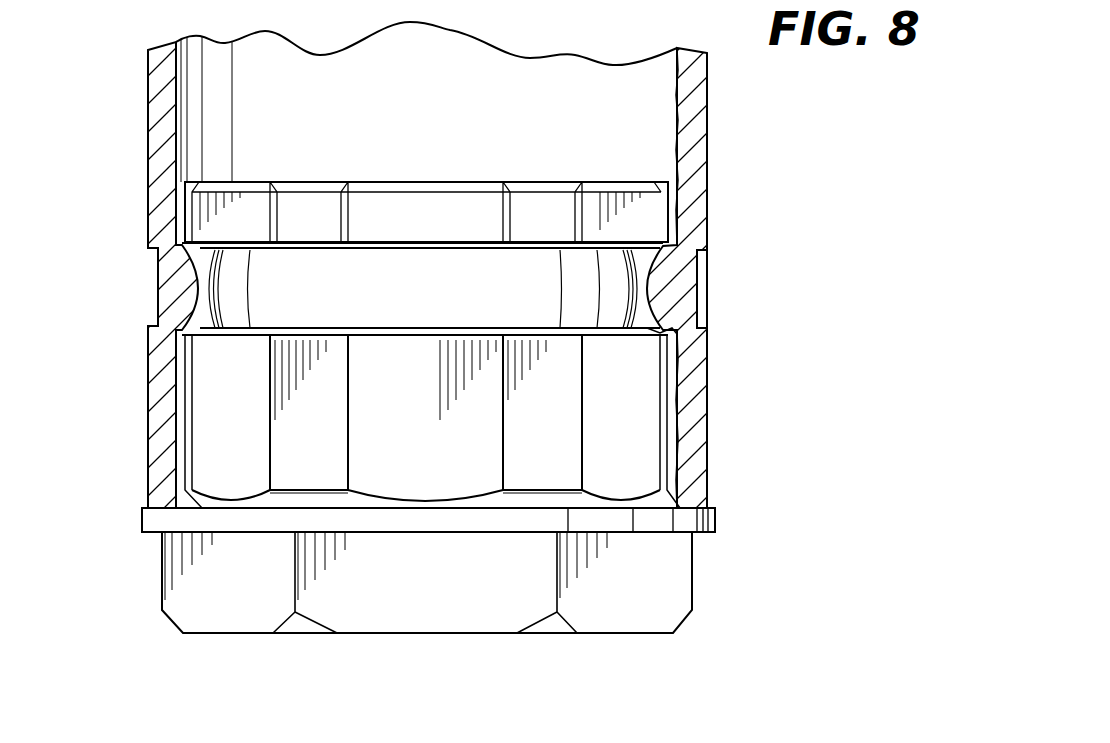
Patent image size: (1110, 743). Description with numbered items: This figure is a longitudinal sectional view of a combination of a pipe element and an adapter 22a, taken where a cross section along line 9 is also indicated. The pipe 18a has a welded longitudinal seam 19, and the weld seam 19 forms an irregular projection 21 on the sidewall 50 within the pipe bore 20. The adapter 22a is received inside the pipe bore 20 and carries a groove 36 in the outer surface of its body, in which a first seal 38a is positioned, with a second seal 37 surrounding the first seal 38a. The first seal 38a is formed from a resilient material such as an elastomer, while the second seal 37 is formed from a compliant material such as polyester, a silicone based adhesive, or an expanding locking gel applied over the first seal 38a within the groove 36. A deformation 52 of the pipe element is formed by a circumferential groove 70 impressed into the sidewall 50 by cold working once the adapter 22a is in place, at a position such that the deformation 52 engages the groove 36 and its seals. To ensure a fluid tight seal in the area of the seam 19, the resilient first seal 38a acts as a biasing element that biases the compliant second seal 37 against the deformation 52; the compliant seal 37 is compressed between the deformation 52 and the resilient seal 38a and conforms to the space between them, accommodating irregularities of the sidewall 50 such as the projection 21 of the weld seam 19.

The pipe bore 20 is at (441, 99).
The irregular projection 21 is at (692, 118).
The adapter 22a is at (402, 195).
The pipe 18a is at (697, 131).
The welded longitudinal seam 19 is at (710, 166).
The sidewall 50 is at (705, 219).
The circumferential groove 70 is at (150, 256).
The first seal 38a is at (203, 278).
The second seal 37 is at (643, 273).
The groove 36 is at (413, 302).
The deformation 52 is at (656, 332).
The section line 9- 9 is at (750, 363).